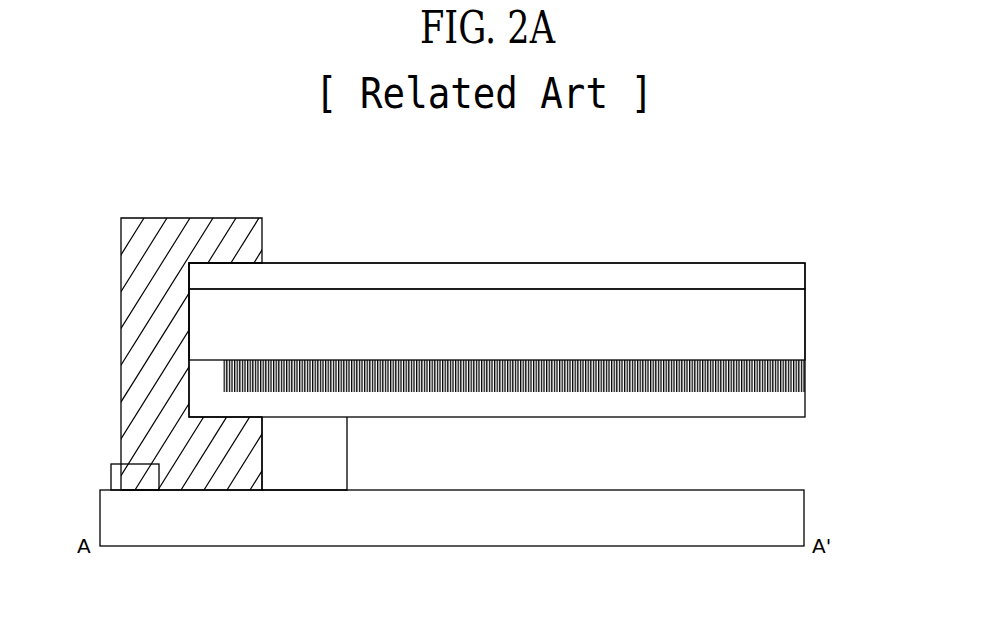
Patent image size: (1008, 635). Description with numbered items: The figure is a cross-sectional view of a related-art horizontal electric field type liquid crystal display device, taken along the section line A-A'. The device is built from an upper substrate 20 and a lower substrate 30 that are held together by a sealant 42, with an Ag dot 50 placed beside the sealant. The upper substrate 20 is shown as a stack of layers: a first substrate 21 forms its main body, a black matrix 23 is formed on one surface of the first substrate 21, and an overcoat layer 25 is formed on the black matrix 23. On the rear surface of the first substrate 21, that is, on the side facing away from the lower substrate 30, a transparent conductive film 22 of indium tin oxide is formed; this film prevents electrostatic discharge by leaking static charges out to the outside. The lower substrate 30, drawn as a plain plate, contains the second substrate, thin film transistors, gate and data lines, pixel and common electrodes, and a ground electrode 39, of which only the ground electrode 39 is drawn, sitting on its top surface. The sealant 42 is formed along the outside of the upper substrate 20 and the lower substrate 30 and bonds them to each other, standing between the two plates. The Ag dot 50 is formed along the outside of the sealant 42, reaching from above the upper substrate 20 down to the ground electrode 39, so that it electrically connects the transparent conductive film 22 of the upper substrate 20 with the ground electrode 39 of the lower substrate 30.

The upper substrate 20 is at (552, 340).
The first substrate 21 is at (805, 322).
The transparent conductive film 22 is at (805, 278).
The black matrix 23 is at (805, 376).
The overcoat layer 25 is at (526, 404).
The lower substrate 30 is at (805, 520).
The ground electrode 39 is at (137, 484).
The sealant 42 is at (308, 467).
The Ag dot 50 is at (130, 342).